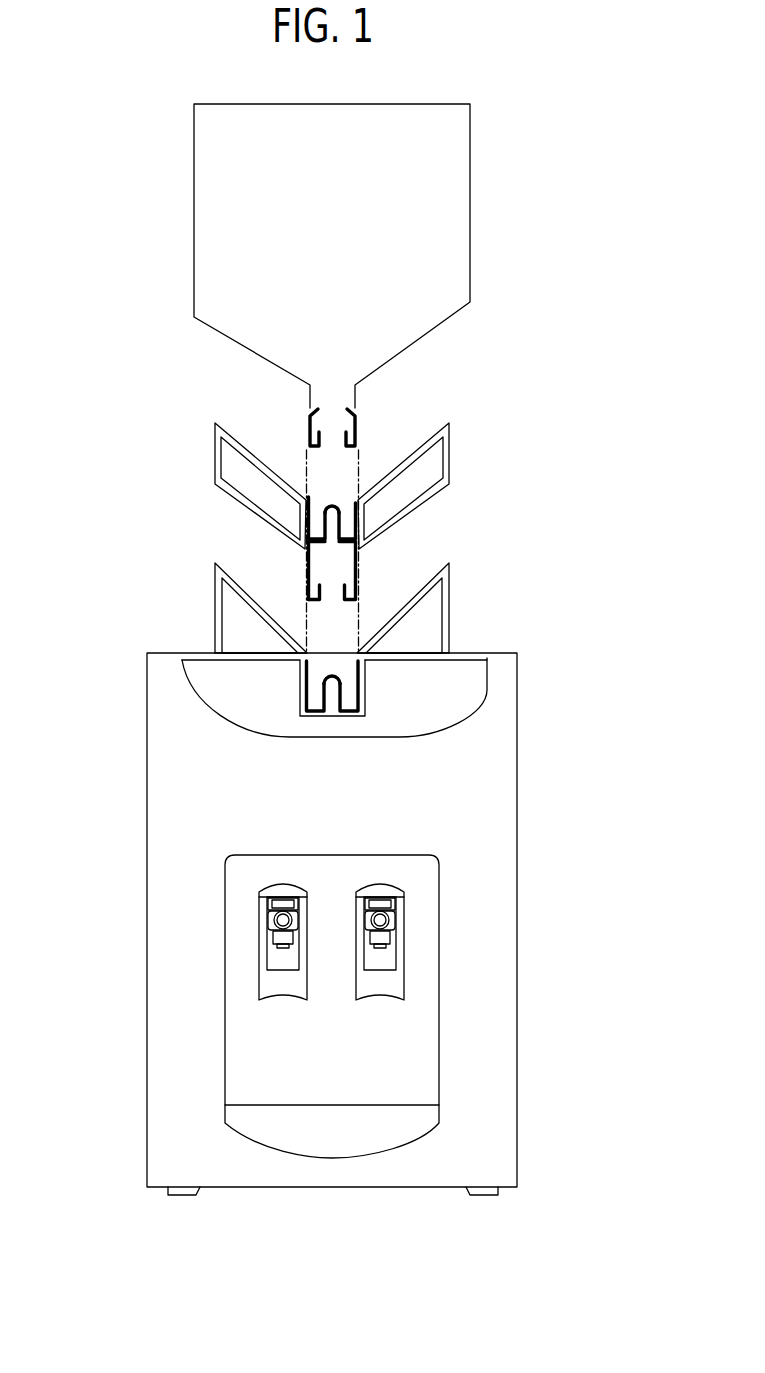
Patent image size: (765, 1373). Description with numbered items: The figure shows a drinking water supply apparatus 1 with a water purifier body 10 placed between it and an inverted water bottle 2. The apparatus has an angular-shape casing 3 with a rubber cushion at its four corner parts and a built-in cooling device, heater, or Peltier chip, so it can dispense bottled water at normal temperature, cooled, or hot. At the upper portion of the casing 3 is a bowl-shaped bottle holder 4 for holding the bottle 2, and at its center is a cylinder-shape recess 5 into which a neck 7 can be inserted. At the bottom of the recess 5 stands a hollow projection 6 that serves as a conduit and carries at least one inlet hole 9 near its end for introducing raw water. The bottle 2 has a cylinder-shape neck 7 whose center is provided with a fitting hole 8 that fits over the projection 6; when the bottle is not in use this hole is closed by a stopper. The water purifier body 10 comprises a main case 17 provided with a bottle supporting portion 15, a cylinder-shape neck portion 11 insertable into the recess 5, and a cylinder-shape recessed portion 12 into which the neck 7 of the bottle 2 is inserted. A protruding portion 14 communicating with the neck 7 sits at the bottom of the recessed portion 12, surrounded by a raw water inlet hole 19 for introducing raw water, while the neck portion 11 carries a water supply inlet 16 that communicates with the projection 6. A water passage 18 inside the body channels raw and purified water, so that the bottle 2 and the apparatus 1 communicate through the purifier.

The drinking water supply apparatus 1 is at (502, 968).
The bottle 2 is at (462, 144).
The casing 3 is at (487, 658).
The bottle holder 4 is at (215, 603).
The recess 5 is at (300, 720).
The projection 6 is at (367, 698).
The neck 7 is at (305, 428).
The fitting hole 8 is at (330, 442).
The inlet hole 9 is at (322, 686).
The water purifier body 10 is at (238, 483).
The neck portion 11 is at (302, 585).
The recessed portion 12 is at (350, 537).
The protruding portion 14 is at (334, 500).
The bottle supporting portion 15 is at (360, 495).
The water supply inlet 16 is at (330, 598).
The main case 17 is at (452, 437).
The water passage 18 is at (338, 572).
The raw water inlet hole 19 is at (302, 497).